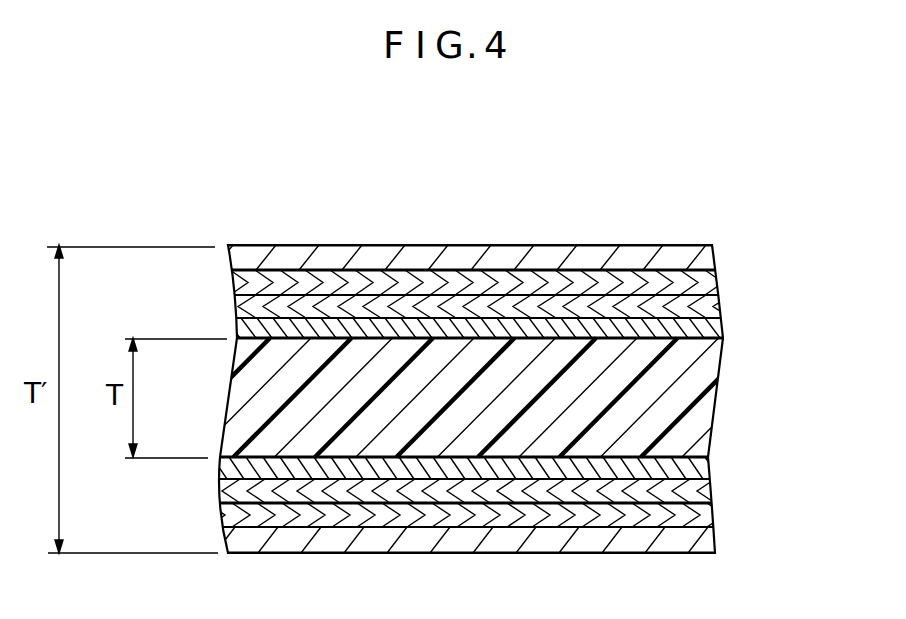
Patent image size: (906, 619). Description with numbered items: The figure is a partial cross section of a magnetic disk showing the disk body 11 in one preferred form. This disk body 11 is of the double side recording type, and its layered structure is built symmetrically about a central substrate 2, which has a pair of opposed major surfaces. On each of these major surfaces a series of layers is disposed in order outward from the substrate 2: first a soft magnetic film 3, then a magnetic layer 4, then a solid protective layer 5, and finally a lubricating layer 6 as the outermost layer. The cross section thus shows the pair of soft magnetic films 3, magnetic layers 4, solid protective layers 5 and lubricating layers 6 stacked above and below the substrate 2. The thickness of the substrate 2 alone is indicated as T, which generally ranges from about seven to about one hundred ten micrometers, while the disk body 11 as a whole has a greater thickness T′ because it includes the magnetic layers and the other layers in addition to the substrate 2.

The disk body 11 is at (650, 208).
The substrate 2 is at (712, 398).
The soft magnetic film 3 is at (722, 330).
The magnetic layer 4 is at (718, 308).
The solid protective layer 5 is at (716, 284).
The lubricating layer 6 is at (708, 258).